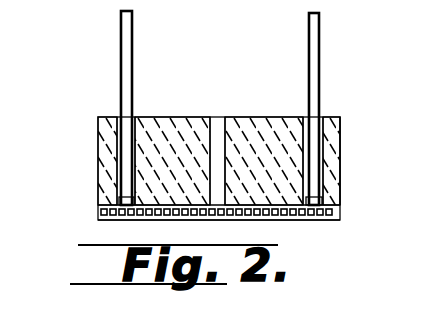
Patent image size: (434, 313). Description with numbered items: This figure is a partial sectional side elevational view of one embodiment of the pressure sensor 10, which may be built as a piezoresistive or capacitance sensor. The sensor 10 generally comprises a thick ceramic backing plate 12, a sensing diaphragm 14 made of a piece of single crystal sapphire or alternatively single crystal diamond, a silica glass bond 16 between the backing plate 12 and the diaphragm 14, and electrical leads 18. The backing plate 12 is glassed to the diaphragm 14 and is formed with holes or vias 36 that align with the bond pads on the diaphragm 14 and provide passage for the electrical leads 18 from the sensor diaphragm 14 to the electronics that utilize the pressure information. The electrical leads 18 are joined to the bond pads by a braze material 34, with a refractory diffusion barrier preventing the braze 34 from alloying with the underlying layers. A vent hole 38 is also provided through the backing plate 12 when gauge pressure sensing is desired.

The sensor 10 is at (175, 168).
The backing plate 12 is at (297, 195).
The sensing diaphragm 14 is at (187, 222).
The silica glass bond 16 is at (336, 205).
The electrical leads 18 is at (313, 128).
The braze material 34 is at (333, 197).
The vias 36 is at (324, 118).
The vent hole 38 is at (211, 117).